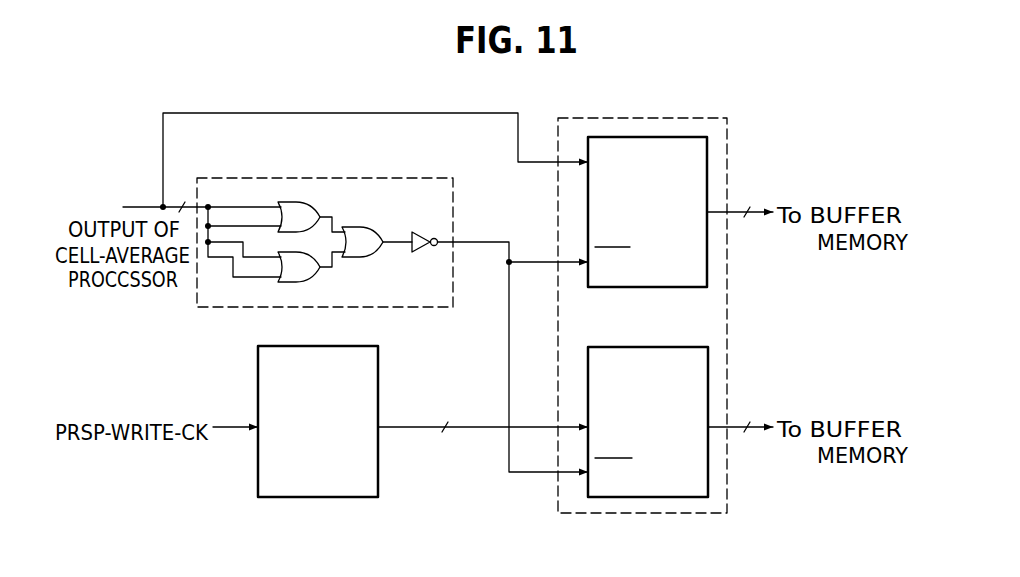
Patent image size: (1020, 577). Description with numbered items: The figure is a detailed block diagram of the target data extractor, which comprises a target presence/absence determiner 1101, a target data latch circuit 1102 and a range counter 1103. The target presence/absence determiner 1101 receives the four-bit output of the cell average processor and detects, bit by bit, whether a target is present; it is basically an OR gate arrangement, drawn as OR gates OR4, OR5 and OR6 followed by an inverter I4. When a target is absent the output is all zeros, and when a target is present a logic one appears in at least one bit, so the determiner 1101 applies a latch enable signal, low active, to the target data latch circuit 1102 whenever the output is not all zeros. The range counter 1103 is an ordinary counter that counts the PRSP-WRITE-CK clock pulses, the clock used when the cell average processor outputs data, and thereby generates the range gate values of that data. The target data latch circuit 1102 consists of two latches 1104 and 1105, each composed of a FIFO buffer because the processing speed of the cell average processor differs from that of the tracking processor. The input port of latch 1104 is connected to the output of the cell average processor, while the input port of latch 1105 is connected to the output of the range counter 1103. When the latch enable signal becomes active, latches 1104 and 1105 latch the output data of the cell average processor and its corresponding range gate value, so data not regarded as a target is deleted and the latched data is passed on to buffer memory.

The target presence/absence determiner 1101 is at (327, 269).
The target data latch circuit 1102 is at (691, 336).
The range counter 1103 is at (335, 497).
The latch 1104 is at (650, 287).
The latch 1105 is at (652, 497).
The OR gate OR4 is at (314, 207).
The OR gate OR5 is at (305, 282).
The OR gate OR6 is at (368, 227).
The inverter I4 is at (424, 257).